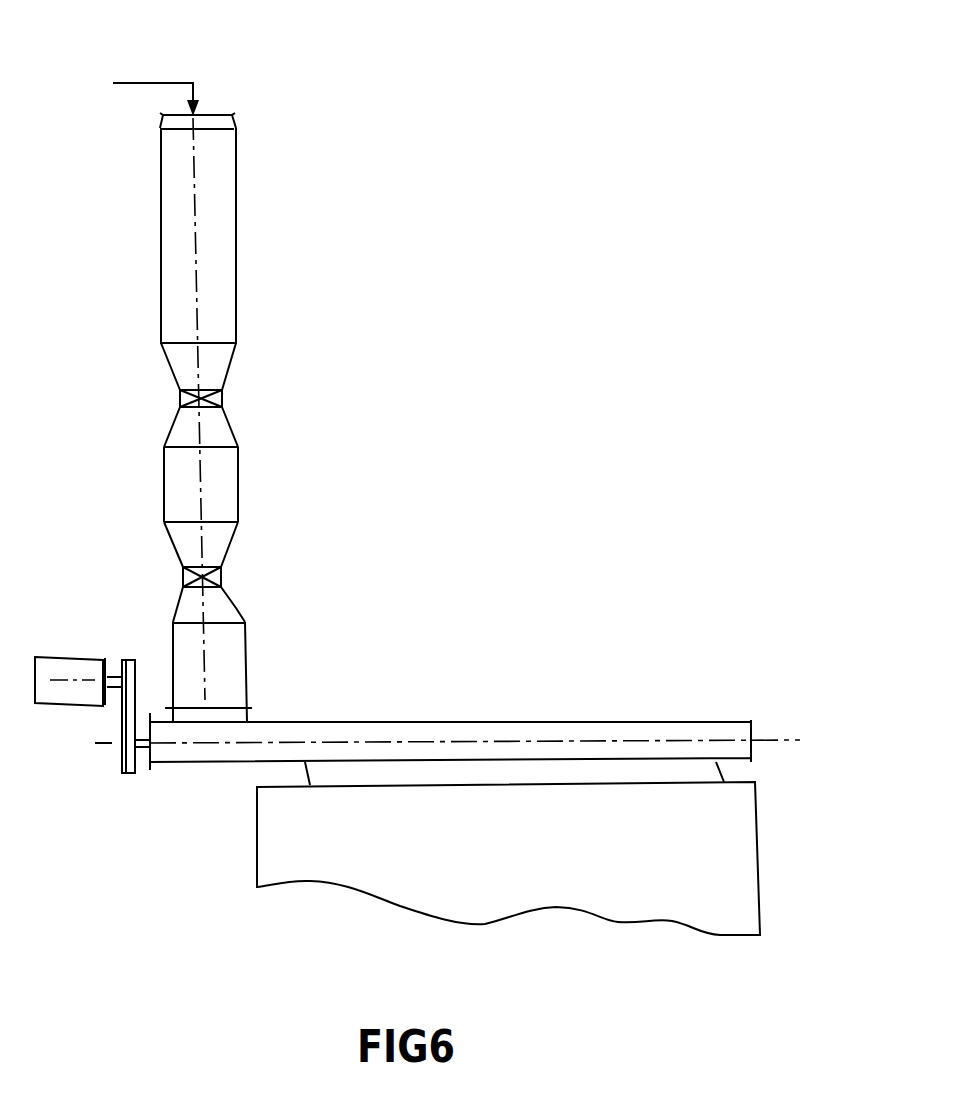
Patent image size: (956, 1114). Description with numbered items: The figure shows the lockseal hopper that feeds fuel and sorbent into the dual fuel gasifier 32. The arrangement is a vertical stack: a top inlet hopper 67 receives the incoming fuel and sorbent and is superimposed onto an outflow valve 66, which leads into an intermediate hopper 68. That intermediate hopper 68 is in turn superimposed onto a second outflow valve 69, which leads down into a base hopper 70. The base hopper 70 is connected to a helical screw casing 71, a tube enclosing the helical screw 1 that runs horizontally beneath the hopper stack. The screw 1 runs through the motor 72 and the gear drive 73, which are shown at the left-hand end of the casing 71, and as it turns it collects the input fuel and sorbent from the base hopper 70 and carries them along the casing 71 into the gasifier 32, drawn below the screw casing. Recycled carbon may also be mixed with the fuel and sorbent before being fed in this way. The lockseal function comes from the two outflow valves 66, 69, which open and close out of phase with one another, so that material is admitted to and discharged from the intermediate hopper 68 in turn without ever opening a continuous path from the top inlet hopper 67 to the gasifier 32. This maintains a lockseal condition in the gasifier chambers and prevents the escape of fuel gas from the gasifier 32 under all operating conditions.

The helical screw 1 is at (215, 78).
The top inlet hopper 67 is at (247, 218).
The outflow valve 66 is at (237, 395).
The intermediate hopper 68 is at (255, 483).
The outflow valve 69 is at (233, 573).
The base hopper 70 is at (256, 658).
The helical screw casing 71 is at (412, 710).
The motor 72 is at (63, 638).
The gear drive 73 is at (112, 775).
The dual fuel gasifier 32 is at (773, 840).